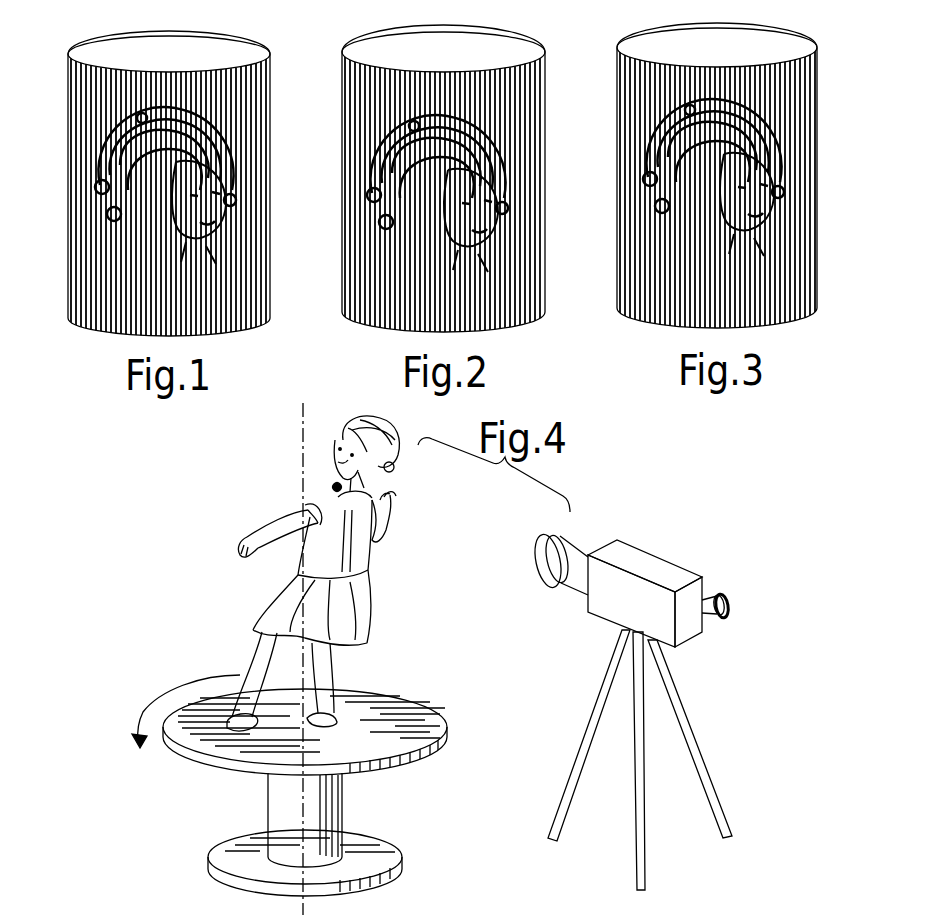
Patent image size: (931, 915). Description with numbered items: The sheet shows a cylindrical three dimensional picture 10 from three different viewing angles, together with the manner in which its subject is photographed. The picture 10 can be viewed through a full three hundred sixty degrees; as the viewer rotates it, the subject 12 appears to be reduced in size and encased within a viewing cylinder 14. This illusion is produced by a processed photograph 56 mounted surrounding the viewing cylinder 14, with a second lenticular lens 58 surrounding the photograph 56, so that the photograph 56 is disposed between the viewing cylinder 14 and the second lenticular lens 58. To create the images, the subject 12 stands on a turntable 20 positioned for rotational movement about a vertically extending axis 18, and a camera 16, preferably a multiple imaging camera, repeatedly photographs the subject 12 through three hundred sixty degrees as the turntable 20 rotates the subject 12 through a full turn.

In FIG. 1, the cylindrical three dimensional picture 10 is at (168, 195).
In FIG. 2, the cylindrical three dimensional picture 10 is at (446, 190).
In FIG. 3, the cylindrical three dimensional picture 10 is at (720, 188).
In FIG. 1, the subject 12 is at (240, 177).
In FIG. 2, the subject 12 is at (530, 178).
In FIG. 3, the subject 12 is at (793, 173).
In FIG. 4, the subject 12 is at (375, 530).
In FIG. 1, the viewing cylinder 14 is at (227, 335).
In FIG. 2, the viewing cylinder 14 is at (500, 328).
In FIG. 3, the viewing cylinder 14 is at (775, 325).
In FIG. 1, the photograph 56 is at (240, 37).
In FIG. 2, the photograph 56 is at (517, 34).
In FIG. 3, the photograph 56 is at (792, 33).
In FIG. 1, the second lenticular lens 58 is at (108, 316).
In FIG. 2, the second lenticular lens 58 is at (383, 312).
In FIG. 3, the second lenticular lens 58 is at (660, 308).
In FIG. 4, the camera 16 is at (662, 572).
In FIG. 4, the vertically extending axis 18 is at (303, 457).
In FIG. 4, the turntable 20 is at (420, 700).